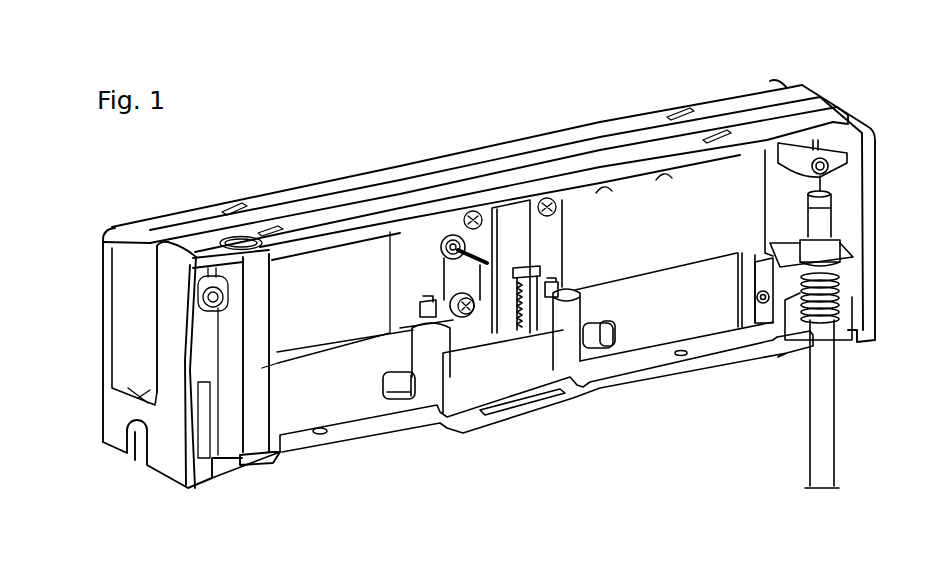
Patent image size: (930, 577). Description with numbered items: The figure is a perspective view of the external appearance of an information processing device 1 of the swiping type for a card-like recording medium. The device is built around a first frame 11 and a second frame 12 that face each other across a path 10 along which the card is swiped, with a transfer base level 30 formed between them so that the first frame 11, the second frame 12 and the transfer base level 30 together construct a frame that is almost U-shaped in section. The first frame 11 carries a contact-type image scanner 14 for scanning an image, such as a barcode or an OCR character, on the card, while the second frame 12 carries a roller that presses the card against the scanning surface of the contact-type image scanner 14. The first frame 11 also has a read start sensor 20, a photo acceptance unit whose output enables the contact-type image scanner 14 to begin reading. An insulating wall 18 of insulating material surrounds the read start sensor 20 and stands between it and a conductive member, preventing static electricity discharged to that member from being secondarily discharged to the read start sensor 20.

The information processing device 1 is at (104, 488).
The path 10 is at (135, 332).
The first frame 11 is at (828, 116).
The second frame 12 is at (716, 103).
The contact-type image scanner 14 is at (513, 243).
The insulating wall 18 is at (447, 236).
The read start sensor 20 is at (468, 312).
The transfer base level 30 is at (103, 400).